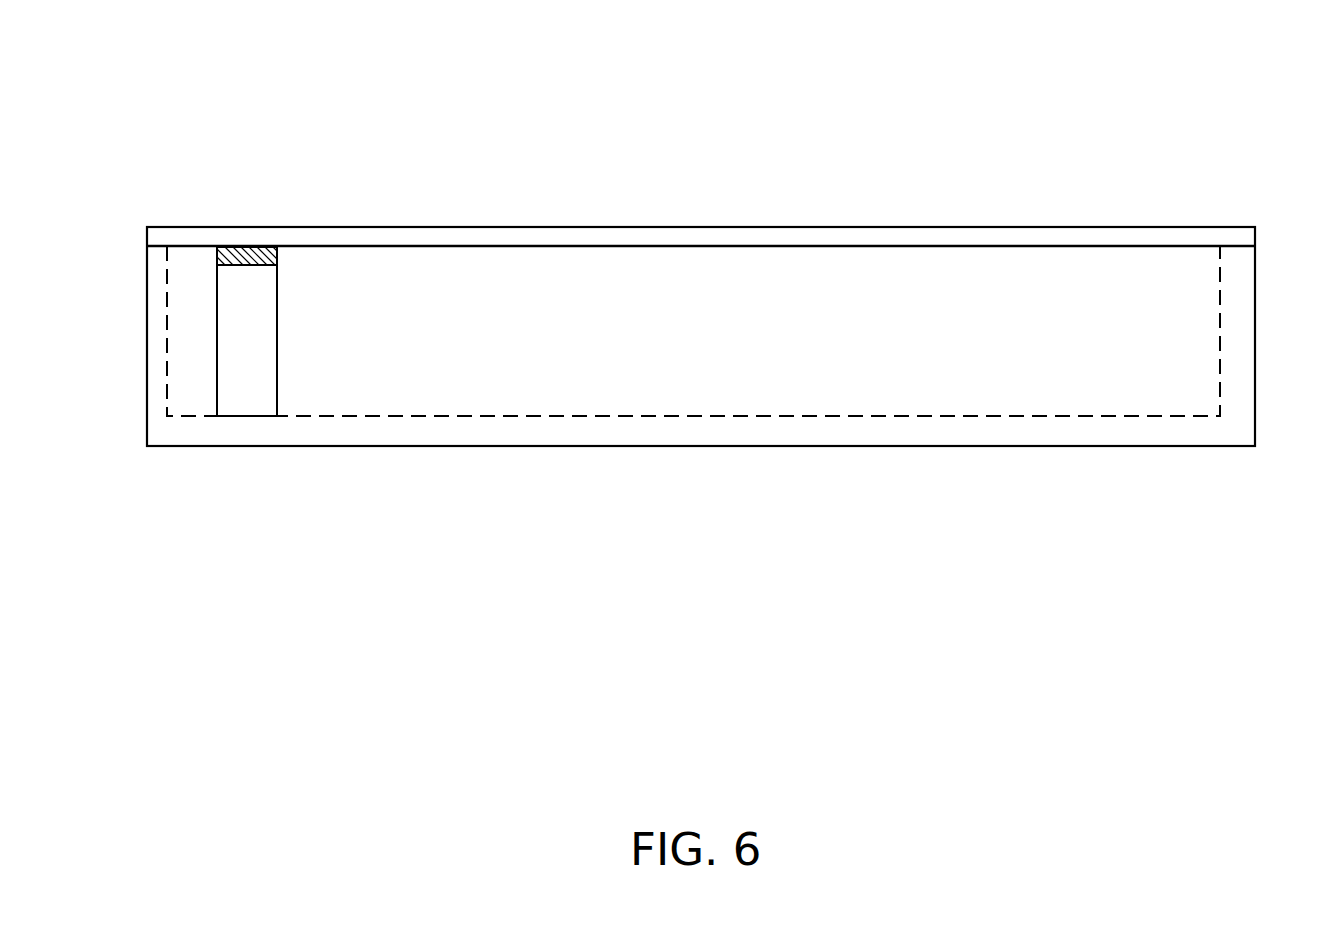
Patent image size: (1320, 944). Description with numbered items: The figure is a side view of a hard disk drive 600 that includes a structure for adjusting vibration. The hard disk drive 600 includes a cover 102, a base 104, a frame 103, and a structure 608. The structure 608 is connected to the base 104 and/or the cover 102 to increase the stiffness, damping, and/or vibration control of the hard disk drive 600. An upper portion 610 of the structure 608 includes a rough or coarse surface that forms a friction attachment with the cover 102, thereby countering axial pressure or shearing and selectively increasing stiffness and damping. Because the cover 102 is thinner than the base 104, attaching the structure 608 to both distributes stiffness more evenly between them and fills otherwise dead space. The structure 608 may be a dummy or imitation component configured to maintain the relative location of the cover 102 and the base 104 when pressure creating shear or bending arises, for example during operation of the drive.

The hard disk drive 600 is at (136, 88).
The cover 102 is at (528, 226).
The frame 103 is at (1255, 377).
The base 104 is at (555, 417).
The structure 608 is at (278, 342).
The upper portion 610 is at (247, 246).